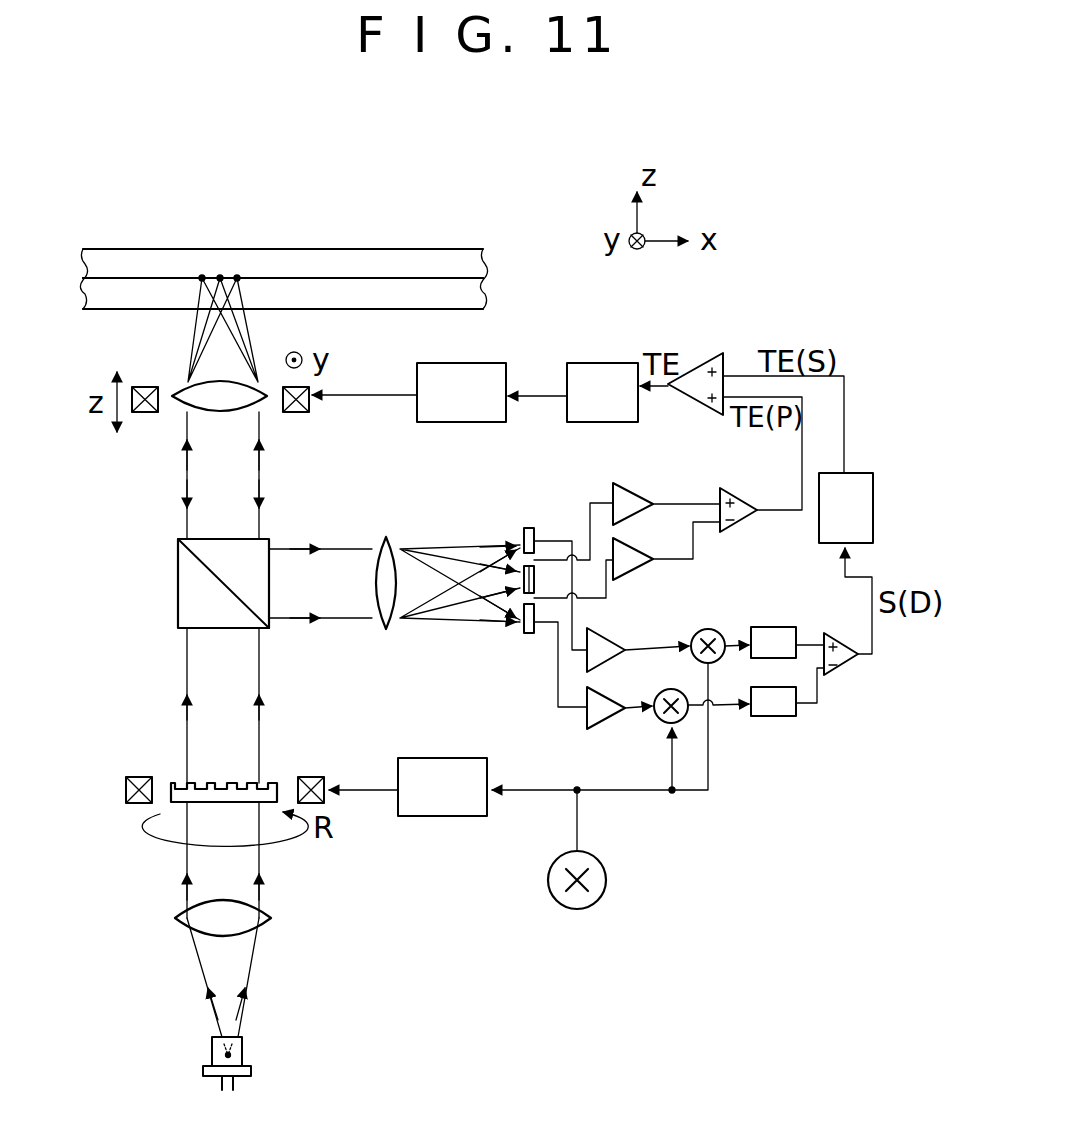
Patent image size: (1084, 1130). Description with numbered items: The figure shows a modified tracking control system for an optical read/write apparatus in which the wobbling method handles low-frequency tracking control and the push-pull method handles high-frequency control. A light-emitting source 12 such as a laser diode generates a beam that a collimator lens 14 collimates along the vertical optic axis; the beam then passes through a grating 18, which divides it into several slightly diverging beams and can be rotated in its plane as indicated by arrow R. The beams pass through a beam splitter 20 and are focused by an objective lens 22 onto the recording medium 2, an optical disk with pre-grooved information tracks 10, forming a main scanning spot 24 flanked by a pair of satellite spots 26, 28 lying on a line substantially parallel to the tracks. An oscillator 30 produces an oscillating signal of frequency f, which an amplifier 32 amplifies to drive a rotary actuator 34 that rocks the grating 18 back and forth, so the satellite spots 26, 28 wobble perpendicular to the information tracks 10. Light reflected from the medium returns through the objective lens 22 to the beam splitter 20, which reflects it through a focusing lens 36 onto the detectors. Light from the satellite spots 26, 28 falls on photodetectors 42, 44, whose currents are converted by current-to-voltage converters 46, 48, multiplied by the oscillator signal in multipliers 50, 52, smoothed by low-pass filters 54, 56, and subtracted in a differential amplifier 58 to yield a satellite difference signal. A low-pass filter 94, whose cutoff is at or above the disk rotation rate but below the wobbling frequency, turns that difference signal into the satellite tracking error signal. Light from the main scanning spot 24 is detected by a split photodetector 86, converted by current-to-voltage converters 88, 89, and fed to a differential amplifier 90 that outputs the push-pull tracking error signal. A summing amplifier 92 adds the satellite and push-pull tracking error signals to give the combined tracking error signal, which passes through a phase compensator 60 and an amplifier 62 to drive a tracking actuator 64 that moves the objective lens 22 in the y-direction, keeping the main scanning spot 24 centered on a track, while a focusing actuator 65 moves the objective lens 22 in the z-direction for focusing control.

The recording medium 2 is at (392, 255).
The information track 10 is at (326, 277).
The light-emitting source 12 is at (242, 1054).
The collimator lens 14 is at (267, 918).
The grating 18 is at (172, 782).
The beam splitter 20 is at (181, 592).
The objective lens 22 is at (185, 385).
The main scanning spot 24 is at (220, 278).
The satellite spot 26 is at (200, 276).
The satellite spot 28 is at (238, 278).
The oscillator 30 is at (606, 880).
The amplifier 32 is at (451, 817).
The rotary actuator 34 is at (311, 776).
The focusing lens 36 is at (389, 530).
The photodetector 42 is at (527, 526).
The photodetector 44 is at (529, 634).
The current-to-voltage converter 46 is at (610, 634).
The current-to-voltage converter 48 is at (597, 717).
The multiplier 50 is at (711, 629).
The multiplier 52 is at (660, 692).
The low-pass filter 54 is at (775, 627).
The low-pass filter 56 is at (782, 716).
The differential amplifier 58 is at (842, 633).
The phase compensator 60 is at (580, 372).
The amplifier 62 is at (472, 378).
The tracking actuator 64 is at (297, 413).
The focusing actuator 65 is at (145, 413).
The split photodetector 86 is at (528, 584).
The current-to-voltage converter 88 is at (636, 488).
The current-to-voltage converter 89 is at (639, 565).
The differential amplifier 90 is at (740, 496).
The summing amplifier 92 is at (701, 364).
The low-pass filter 94 is at (819, 531).